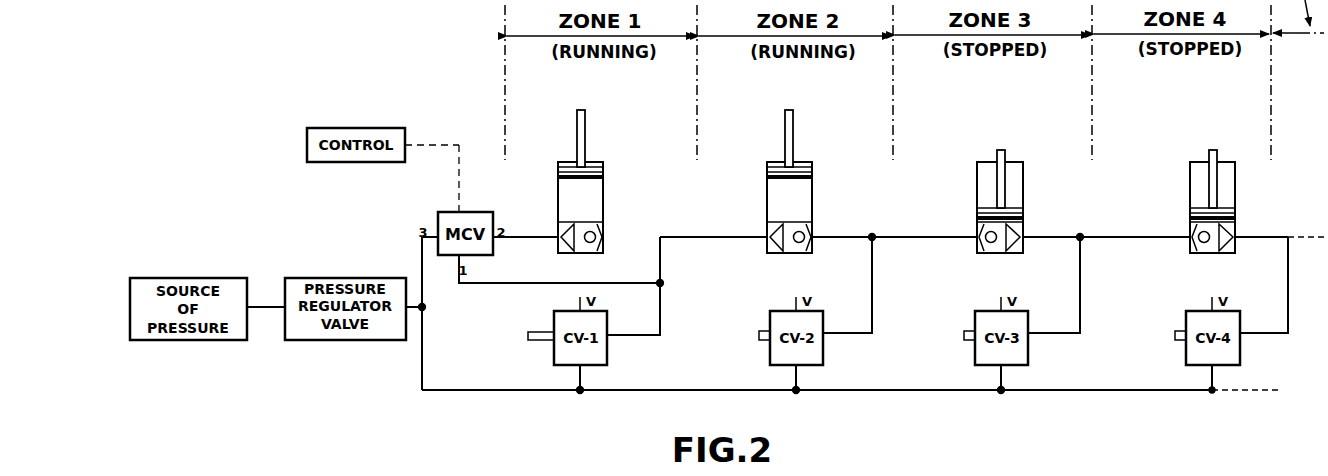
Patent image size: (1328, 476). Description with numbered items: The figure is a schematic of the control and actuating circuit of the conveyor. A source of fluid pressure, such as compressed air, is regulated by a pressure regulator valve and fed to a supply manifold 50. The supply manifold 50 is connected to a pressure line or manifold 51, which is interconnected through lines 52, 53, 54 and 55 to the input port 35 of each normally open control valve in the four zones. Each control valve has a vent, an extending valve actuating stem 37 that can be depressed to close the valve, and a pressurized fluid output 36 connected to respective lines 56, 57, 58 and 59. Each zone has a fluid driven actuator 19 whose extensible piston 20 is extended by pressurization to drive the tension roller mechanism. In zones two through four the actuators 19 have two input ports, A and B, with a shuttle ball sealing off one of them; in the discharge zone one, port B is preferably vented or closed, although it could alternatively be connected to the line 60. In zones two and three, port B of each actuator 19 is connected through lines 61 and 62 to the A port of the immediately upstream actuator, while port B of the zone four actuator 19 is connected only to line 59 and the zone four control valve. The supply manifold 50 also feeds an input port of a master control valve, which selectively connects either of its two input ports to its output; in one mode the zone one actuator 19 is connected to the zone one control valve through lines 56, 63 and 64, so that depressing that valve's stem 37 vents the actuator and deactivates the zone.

The fluid driven actuator 19 is at (610, 181).
The extensible piston 20 is at (899, 159).
The input port 35 is at (878, 392).
The pressurized fluid output 36 is at (945, 356).
The valve actuating stem 37 is at (832, 345).
The supply manifold 50 is at (420, 358).
The pressure line or manifold 51 is at (491, 392).
The line 52 is at (585, 392).
The line 53 is at (791, 393).
The line 54 is at (998, 393).
The line 55 is at (1208, 393).
The line 56 is at (662, 313).
The line 57 is at (874, 296).
The line 58 is at (1082, 285).
The line 59 is at (1290, 283).
The line 60 is at (700, 236).
The line 61 is at (912, 236).
The line 62 is at (1119, 236).
The line 63 is at (545, 283).
The line 64 is at (521, 236).